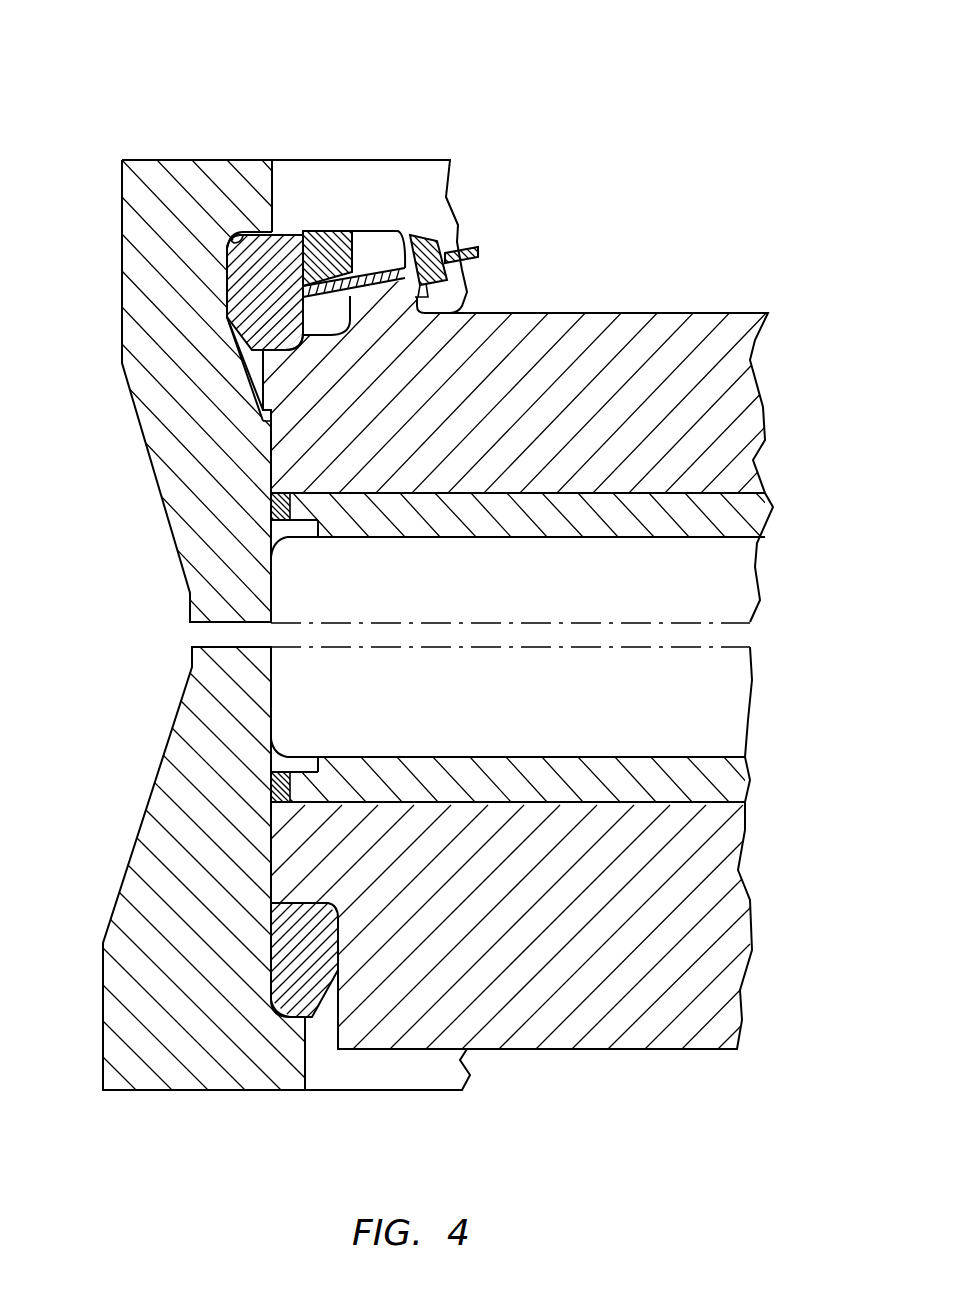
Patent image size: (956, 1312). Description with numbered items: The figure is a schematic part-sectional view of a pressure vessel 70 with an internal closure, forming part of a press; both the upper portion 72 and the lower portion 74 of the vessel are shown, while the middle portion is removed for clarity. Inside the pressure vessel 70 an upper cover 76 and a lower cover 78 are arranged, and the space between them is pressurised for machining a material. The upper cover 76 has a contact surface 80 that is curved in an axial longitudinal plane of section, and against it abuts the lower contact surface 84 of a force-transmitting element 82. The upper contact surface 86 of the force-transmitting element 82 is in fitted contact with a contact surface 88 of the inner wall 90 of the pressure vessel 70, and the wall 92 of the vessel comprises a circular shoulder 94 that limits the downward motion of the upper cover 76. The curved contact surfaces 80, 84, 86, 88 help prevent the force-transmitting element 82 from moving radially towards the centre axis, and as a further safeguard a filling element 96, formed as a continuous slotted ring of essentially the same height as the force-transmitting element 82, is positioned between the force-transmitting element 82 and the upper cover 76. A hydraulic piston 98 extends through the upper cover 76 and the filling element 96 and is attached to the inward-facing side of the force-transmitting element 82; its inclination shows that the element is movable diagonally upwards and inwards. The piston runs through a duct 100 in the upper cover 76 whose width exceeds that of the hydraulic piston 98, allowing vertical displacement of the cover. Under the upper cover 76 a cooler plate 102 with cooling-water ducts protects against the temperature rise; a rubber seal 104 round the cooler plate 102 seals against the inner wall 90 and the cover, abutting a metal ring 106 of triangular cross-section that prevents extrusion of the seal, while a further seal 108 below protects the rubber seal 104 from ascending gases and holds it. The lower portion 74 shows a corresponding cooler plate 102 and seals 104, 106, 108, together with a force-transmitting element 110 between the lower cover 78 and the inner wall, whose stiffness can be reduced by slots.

The pressure vessel 70 is at (172, 82).
The upper portion 72 is at (122, 275).
The lower portion 74 is at (103, 980).
The upper cover 76 is at (598, 332).
The lower cover 78 is at (640, 1035).
The contact surface 80 is at (290, 347).
The force-transmitting element 82 is at (295, 237).
The lower contact surface 84 is at (270, 443).
The upper contact surface 86 is at (255, 237).
The contact surface 88 is at (232, 240).
The inner wall 90 is at (272, 185).
The wall 92 is at (165, 190).
The circular shoulder 94 is at (271, 485).
The filling element 96 is at (333, 230).
The hydraulic piston 98 is at (482, 252).
The duct 100 is at (377, 237).
The cooler plate 102 is at (750, 523).
The rubber seal 104 is at (270, 522).
The metal ring 106 is at (272, 530).
The seal 108 is at (192, 619).
The force-transmitting element 110 is at (313, 1017).